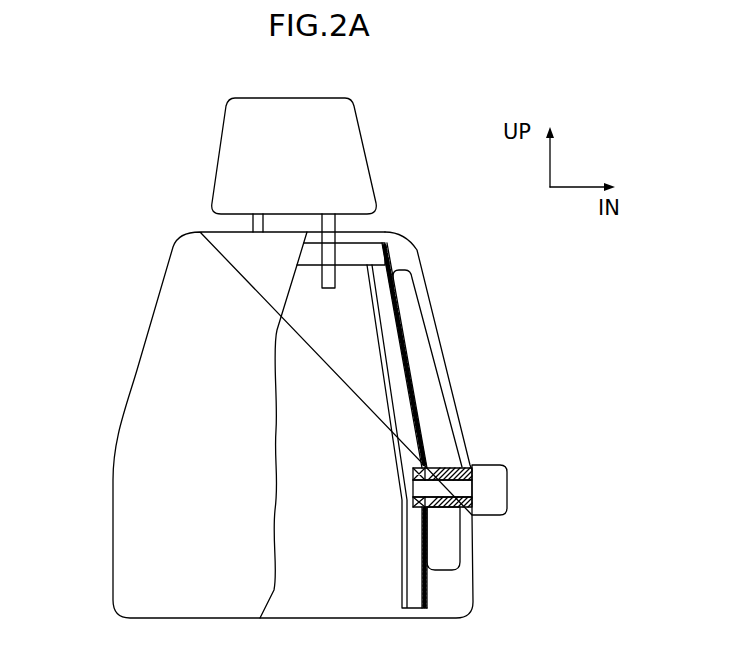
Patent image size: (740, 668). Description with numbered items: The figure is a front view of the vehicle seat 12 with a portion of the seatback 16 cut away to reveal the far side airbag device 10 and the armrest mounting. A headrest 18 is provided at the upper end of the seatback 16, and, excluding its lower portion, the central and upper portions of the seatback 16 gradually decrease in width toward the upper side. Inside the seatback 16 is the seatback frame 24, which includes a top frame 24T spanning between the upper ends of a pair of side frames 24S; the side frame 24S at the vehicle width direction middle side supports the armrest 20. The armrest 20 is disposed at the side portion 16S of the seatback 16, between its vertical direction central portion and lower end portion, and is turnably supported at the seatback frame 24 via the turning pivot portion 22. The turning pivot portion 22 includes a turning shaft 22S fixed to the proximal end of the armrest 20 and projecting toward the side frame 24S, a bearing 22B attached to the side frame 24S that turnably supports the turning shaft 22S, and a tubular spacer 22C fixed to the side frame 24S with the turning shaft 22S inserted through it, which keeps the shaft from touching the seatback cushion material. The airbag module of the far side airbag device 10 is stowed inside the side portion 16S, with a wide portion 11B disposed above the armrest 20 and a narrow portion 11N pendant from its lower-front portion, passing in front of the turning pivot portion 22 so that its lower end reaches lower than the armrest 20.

The far side airbag device 10 is at (502, 416).
The wide portion 11B is at (437, 453).
The narrow portion 11N is at (443, 553).
The vehicle seat 12 is at (127, 229).
The seatback 16 is at (129, 426).
The side portion 16S is at (437, 347).
The headrest 18 is at (322, 103).
The armrest 20 is at (507, 485).
The turning pivot portion 22 is at (331, 447).
The bearing 22B is at (413, 470).
The turning shaft 22S is at (413, 487).
The tubular spacer 22C is at (440, 508).
The seatback frame 24 is at (503, 195).
The top frame 24T is at (358, 253).
The side frame 24S is at (392, 330).